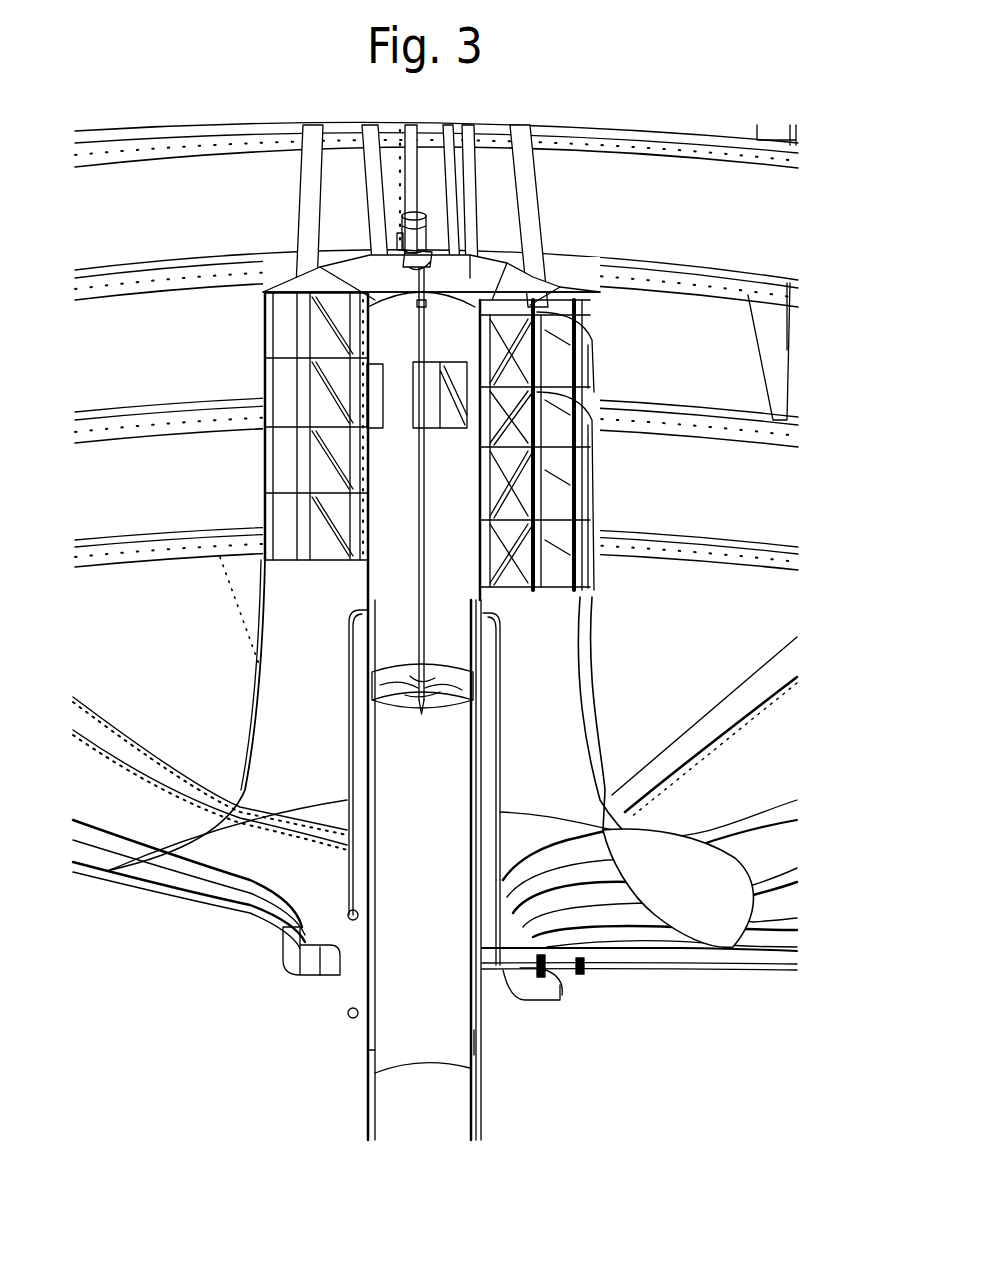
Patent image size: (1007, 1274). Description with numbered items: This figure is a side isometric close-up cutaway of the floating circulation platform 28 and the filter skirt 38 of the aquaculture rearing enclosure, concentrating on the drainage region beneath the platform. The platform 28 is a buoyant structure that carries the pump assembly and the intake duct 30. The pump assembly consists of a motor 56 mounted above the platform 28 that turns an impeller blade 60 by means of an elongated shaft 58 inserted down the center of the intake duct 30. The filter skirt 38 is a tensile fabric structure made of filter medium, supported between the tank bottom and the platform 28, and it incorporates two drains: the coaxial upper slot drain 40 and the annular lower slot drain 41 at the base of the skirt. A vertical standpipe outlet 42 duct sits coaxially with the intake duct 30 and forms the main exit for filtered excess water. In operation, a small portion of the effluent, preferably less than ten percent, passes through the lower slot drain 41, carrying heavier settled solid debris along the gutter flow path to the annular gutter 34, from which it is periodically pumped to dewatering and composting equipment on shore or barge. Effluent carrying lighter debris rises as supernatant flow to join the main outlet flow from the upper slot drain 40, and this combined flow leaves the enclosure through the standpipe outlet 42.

The floating circulation platform 28 is at (605, 295).
The intake duct 30 is at (492, 1049).
The annular gutter 34 is at (312, 991).
The filter skirt 38 is at (160, 826).
The coaxial upper slot drain 40 is at (614, 597).
The annular lower slot drain 41 is at (684, 815).
The standpipe outlet 42 is at (328, 762).
The motor 56 is at (439, 195).
The elongated shaft 58 is at (396, 592).
The impeller blade 60 is at (437, 727).